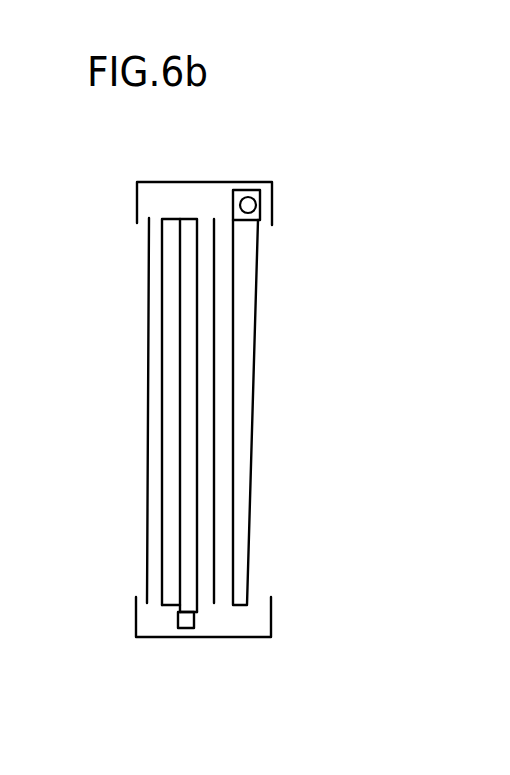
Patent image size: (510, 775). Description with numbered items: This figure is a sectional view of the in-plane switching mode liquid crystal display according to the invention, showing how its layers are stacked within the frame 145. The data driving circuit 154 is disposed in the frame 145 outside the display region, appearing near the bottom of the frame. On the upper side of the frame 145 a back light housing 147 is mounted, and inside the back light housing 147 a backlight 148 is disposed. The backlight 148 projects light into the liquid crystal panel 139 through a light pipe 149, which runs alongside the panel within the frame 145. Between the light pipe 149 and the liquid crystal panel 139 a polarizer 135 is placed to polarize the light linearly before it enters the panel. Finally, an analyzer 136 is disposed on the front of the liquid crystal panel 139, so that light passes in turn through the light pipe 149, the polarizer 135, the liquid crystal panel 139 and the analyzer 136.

The frame 145 is at (250, 183).
The back light housing 147 is at (262, 193).
The backlight 148 is at (252, 208).
The light pipe 149 is at (247, 345).
The polarizer 135 is at (215, 418).
The analyzer 136 is at (148, 423).
The liquid crystal panel 139 is at (185, 513).
The data driving circuit 154 is at (190, 628).